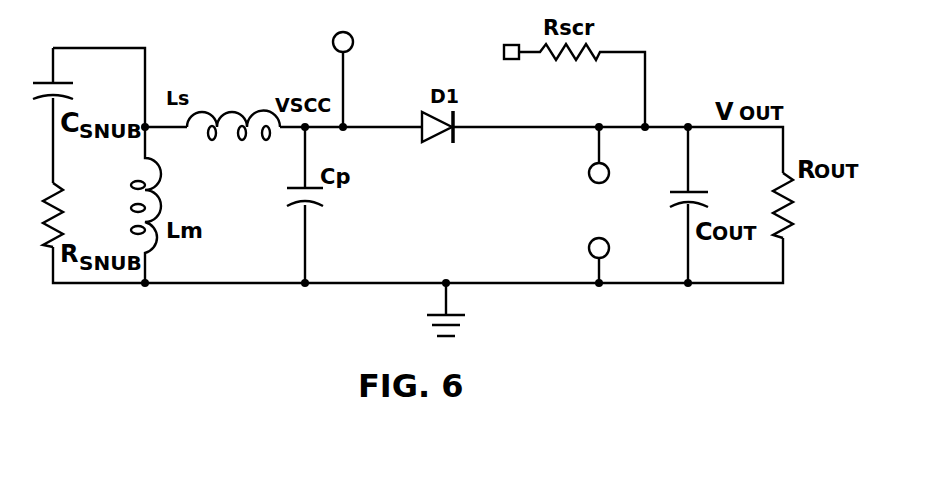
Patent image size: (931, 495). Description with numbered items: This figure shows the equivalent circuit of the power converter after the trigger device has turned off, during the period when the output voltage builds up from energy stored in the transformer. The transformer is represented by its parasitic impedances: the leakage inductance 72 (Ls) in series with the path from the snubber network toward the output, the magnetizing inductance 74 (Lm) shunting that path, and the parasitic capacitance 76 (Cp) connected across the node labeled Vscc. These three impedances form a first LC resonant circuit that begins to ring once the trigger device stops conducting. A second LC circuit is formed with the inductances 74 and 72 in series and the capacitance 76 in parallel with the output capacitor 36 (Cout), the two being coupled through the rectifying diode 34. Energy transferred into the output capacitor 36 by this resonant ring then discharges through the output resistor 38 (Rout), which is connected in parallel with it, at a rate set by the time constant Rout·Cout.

The leakage inductance 72 is at (248, 113).
The magnetizing inductance 74 is at (157, 188).
The parasitic capacitance 76 is at (297, 203).
The rectifying diode 34 is at (441, 140).
The output capacitor 36 is at (678, 205).
The resistor 38 is at (785, 184).